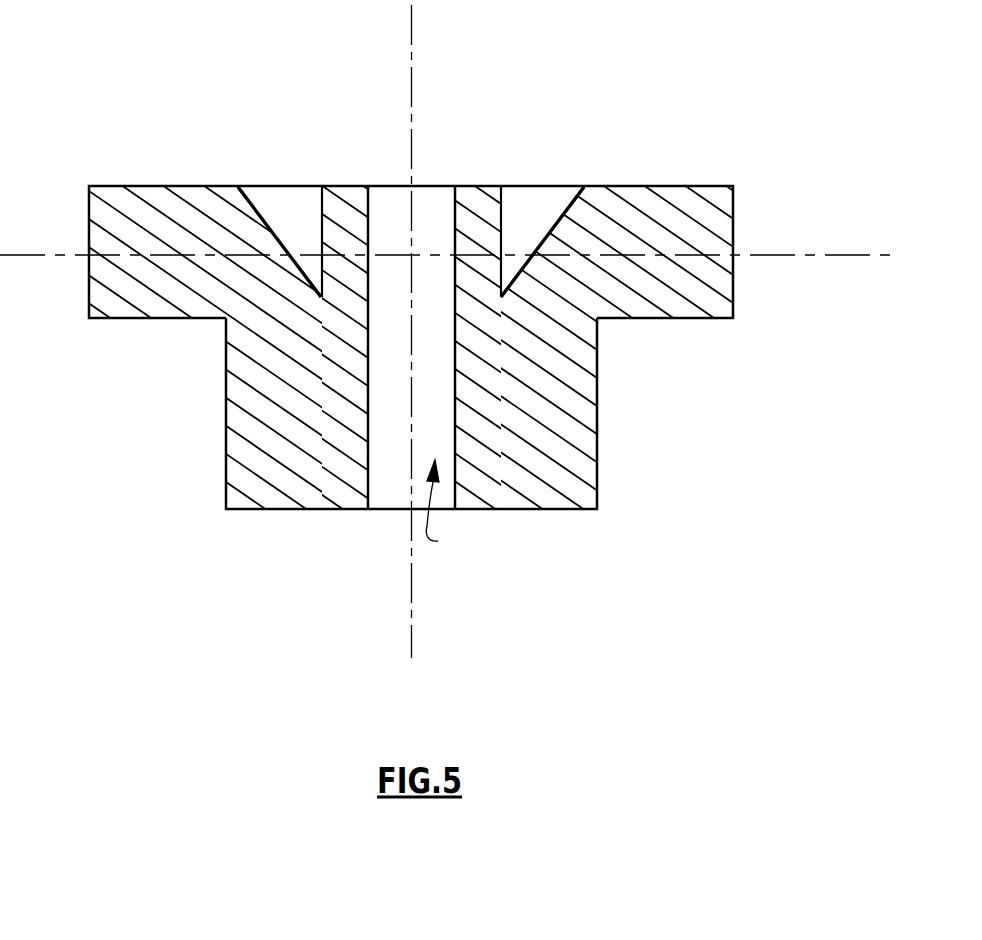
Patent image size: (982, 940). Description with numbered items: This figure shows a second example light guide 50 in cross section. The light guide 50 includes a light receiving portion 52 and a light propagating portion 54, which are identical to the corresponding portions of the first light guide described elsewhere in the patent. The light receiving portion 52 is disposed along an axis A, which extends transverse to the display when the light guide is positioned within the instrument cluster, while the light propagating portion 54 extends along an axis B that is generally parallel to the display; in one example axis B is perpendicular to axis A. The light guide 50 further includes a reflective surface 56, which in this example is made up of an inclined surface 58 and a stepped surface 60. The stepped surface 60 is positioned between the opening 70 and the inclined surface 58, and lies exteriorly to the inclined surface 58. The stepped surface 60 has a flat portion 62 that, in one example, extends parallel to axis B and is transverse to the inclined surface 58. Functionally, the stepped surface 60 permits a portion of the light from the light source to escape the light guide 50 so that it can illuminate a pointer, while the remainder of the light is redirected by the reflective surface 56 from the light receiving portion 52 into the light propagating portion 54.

The light guide 50 is at (412, 439).
The light receiving portion 52 is at (226, 474).
The light propagating portion 54 is at (140, 318).
The reflective surface 56 is at (277, 188).
The inclined surface 58 is at (270, 226).
The stepped surface 60 is at (374, 195).
The flat portion 62 is at (350, 186).
The opening 70 is at (446, 508).
The axis A is at (412, 98).
The axis B is at (813, 256).